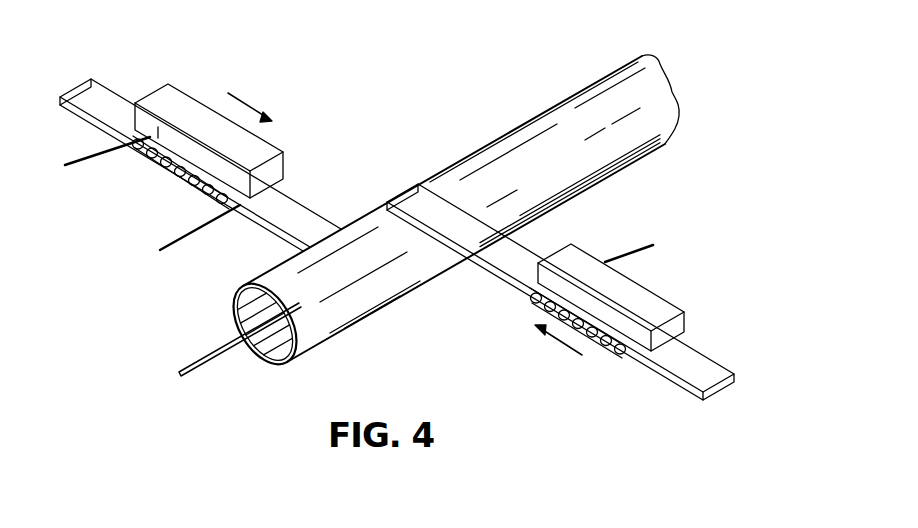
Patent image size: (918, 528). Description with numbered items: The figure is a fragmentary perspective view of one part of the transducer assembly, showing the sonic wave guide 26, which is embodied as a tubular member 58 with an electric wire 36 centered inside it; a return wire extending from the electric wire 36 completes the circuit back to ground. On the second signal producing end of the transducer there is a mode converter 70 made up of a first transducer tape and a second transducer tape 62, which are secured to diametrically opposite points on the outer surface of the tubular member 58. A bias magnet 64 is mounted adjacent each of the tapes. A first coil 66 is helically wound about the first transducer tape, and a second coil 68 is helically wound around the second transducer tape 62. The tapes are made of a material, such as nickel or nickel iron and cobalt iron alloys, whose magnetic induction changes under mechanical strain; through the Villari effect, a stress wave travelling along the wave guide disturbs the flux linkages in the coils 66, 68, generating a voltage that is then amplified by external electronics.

The sonic wave guide 26 is at (602, 55).
The electric wire 36 is at (205, 352).
The tubular member 58 is at (577, 90).
The second transducer tape 62 is at (122, 97).
The bias magnet 64 is at (275, 150).
The first coil 66 is at (686, 316).
The second coil 68 is at (88, 160).
The mode converter 70 is at (678, 257).